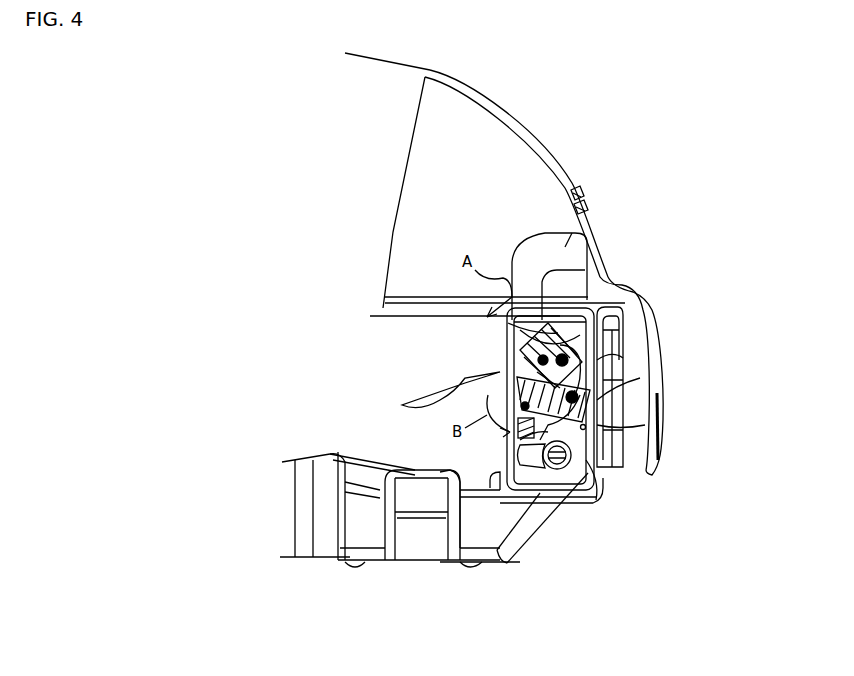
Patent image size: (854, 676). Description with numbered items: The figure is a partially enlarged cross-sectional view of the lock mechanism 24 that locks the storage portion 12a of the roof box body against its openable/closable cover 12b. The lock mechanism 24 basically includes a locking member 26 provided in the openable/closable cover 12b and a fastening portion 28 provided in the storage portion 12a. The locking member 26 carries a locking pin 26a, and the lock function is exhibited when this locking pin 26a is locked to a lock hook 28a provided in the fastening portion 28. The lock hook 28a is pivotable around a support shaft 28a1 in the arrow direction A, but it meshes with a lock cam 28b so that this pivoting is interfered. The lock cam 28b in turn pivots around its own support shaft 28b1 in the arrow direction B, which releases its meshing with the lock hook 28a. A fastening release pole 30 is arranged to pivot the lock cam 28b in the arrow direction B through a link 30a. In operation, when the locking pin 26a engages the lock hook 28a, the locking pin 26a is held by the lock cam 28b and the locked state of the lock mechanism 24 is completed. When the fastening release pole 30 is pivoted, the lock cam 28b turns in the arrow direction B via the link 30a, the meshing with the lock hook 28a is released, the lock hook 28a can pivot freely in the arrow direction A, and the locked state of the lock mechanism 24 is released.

The storage portion 12a is at (332, 547).
The openable/closable cover 12b is at (482, 96).
The lock mechanism 24 is at (436, 393).
The locking member 26 is at (580, 210).
The locking pin 26a is at (640, 362).
The fastening portion 28 is at (550, 503).
The lock hook 28a is at (587, 294).
The support shaft 28a1 is at (512, 345).
The lock cam 28b is at (663, 424).
The support shaft 28b1 is at (662, 387).
The fastening release pole 30 is at (597, 477).
The link 30a is at (525, 557).